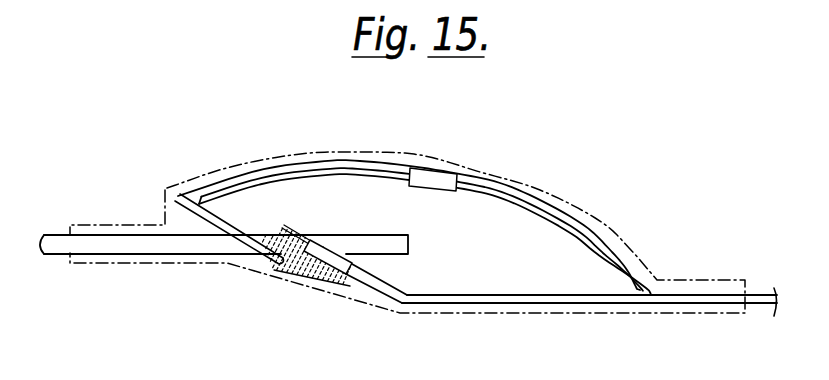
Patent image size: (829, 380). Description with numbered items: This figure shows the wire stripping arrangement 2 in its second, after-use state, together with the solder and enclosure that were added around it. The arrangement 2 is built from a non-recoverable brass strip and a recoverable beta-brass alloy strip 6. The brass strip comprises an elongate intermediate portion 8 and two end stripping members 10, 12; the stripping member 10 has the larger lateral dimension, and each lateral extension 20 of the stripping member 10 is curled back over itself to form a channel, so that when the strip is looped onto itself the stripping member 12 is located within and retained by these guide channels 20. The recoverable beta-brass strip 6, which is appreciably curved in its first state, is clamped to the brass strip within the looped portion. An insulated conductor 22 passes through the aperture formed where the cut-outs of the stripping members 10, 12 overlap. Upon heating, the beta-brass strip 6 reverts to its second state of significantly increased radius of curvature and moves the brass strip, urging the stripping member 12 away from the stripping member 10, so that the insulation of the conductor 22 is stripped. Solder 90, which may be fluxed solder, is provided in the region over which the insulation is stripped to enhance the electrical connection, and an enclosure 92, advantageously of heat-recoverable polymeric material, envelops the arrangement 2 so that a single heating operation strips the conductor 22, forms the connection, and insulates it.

The wire stripping arrangement 2 is at (569, 158).
The recoverable beta-brass alloy strip 6 is at (587, 237).
The elongate intermediate portion 8 is at (577, 303).
The stripping member 10 is at (377, 290).
The stripping member 12 is at (220, 214).
The lateral extension 20 is at (330, 251).
The insulated conductor 22 is at (160, 243).
The solder 90 is at (303, 278).
The enclosure 92 is at (268, 158).